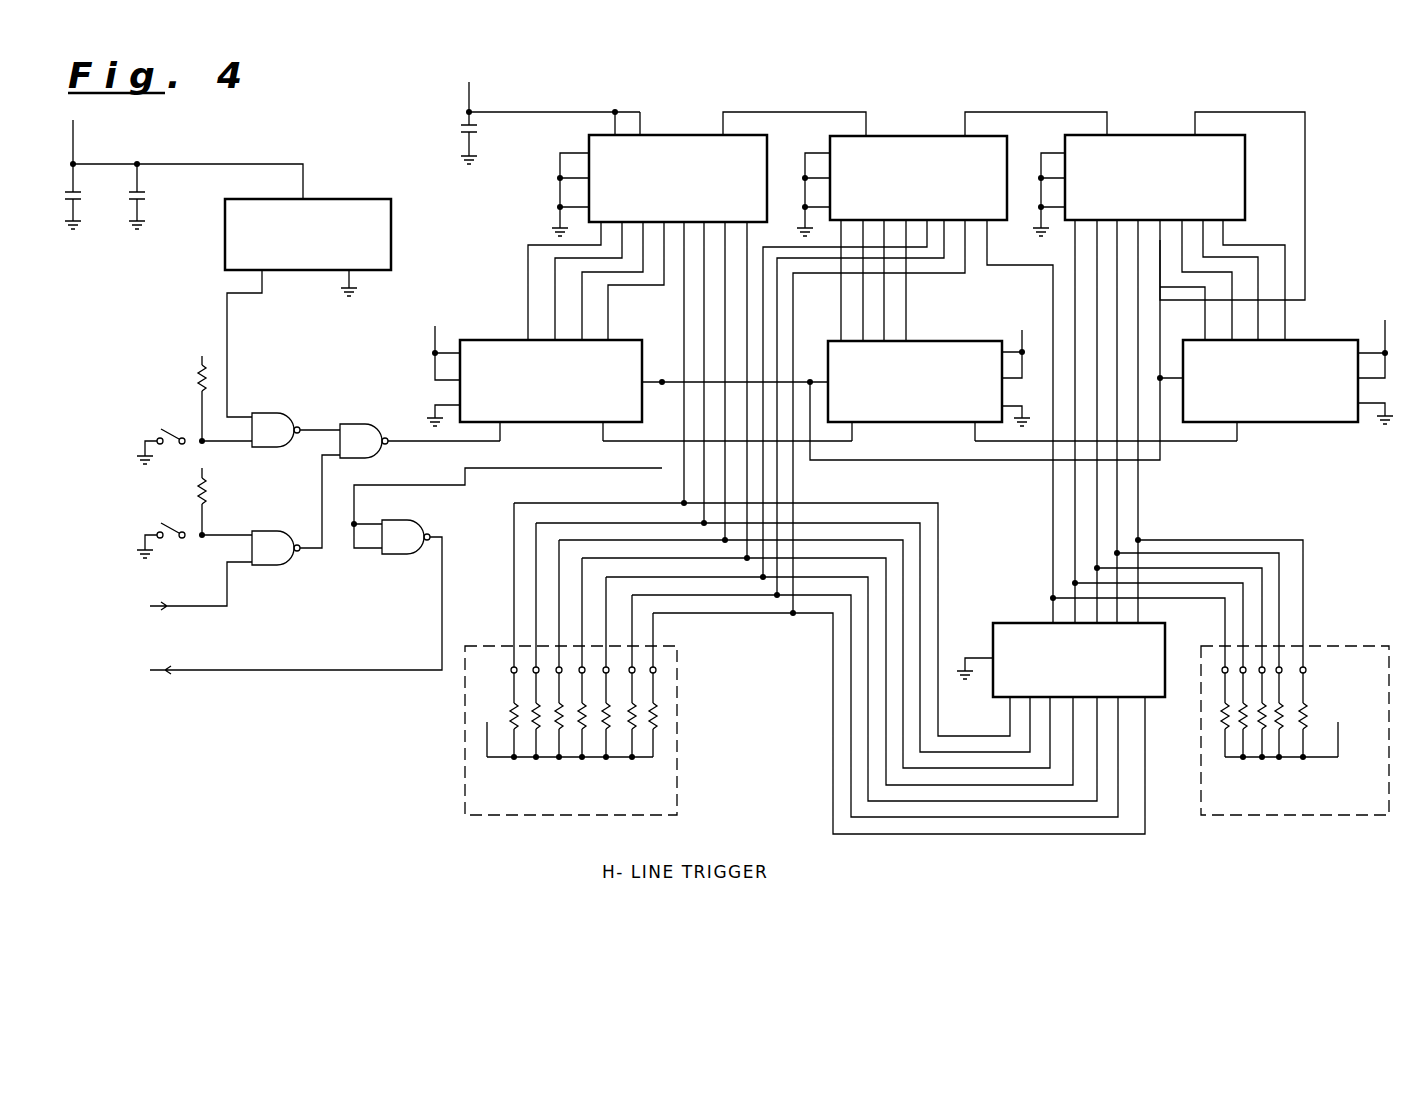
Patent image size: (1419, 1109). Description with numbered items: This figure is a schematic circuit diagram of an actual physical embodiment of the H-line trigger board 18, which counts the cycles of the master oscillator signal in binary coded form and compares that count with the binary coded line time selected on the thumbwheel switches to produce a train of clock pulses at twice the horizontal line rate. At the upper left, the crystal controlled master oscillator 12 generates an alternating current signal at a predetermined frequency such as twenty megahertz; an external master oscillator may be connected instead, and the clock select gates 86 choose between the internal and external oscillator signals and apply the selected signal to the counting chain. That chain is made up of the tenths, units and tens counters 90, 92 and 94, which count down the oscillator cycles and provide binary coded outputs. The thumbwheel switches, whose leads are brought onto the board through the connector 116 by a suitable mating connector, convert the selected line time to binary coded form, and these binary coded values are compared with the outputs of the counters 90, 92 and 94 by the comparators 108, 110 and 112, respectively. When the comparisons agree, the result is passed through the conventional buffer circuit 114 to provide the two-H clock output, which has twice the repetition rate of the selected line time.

The crystal controlled master oscillator 12 is at (250, 197).
The H-line trigger circuit 18 is at (742, 734).
The clock select gates 86 is at (250, 498).
The tenths counter 90 is at (508, 338).
The units counter 92 is at (935, 340).
The tens counter 94 is at (1300, 338).
The comparator 108 is at (677, 132).
The comparator 110 is at (916, 133).
The comparator 112 is at (1146, 133).
The buffer circuit 114 is at (403, 558).
The connector 116 is at (1028, 622).